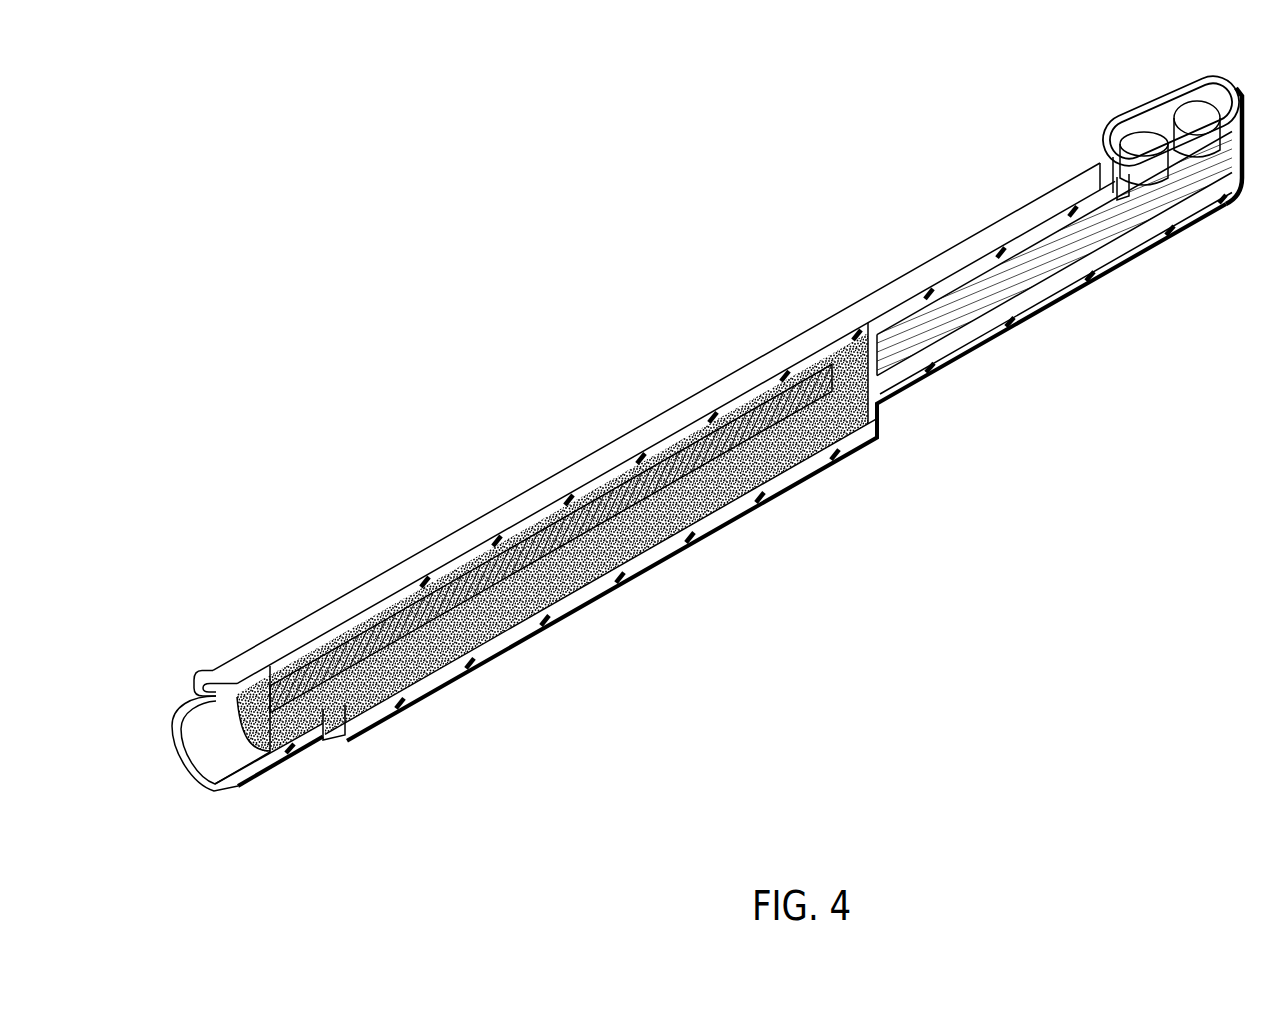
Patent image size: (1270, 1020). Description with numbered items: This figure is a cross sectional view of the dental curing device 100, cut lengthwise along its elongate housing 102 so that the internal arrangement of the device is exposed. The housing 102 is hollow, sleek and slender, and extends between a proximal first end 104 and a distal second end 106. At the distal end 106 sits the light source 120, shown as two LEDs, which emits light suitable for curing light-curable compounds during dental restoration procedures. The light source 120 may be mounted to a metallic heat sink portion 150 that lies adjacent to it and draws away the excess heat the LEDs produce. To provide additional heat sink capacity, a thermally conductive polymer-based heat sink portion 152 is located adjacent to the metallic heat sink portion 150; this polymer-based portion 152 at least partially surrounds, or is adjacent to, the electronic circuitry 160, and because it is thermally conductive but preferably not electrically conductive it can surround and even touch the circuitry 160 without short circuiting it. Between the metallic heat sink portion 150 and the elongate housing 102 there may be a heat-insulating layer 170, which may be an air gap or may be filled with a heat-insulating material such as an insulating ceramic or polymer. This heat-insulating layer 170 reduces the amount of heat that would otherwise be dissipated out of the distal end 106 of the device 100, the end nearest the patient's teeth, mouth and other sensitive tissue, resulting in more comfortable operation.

The dental device 100 is at (320, 500).
The elongate housing 102 is at (571, 484).
The proximal first end 104 is at (158, 684).
The distal second end 106 is at (1076, 154).
The light source 120 is at (1197, 117).
The metallic heat sink portion 150 is at (918, 330).
The thermally conductive polymer-based heat sink portion 152 is at (735, 414).
The electronic circuitry 160 is at (545, 558).
The heat-insulating layer 170 is at (1040, 245).